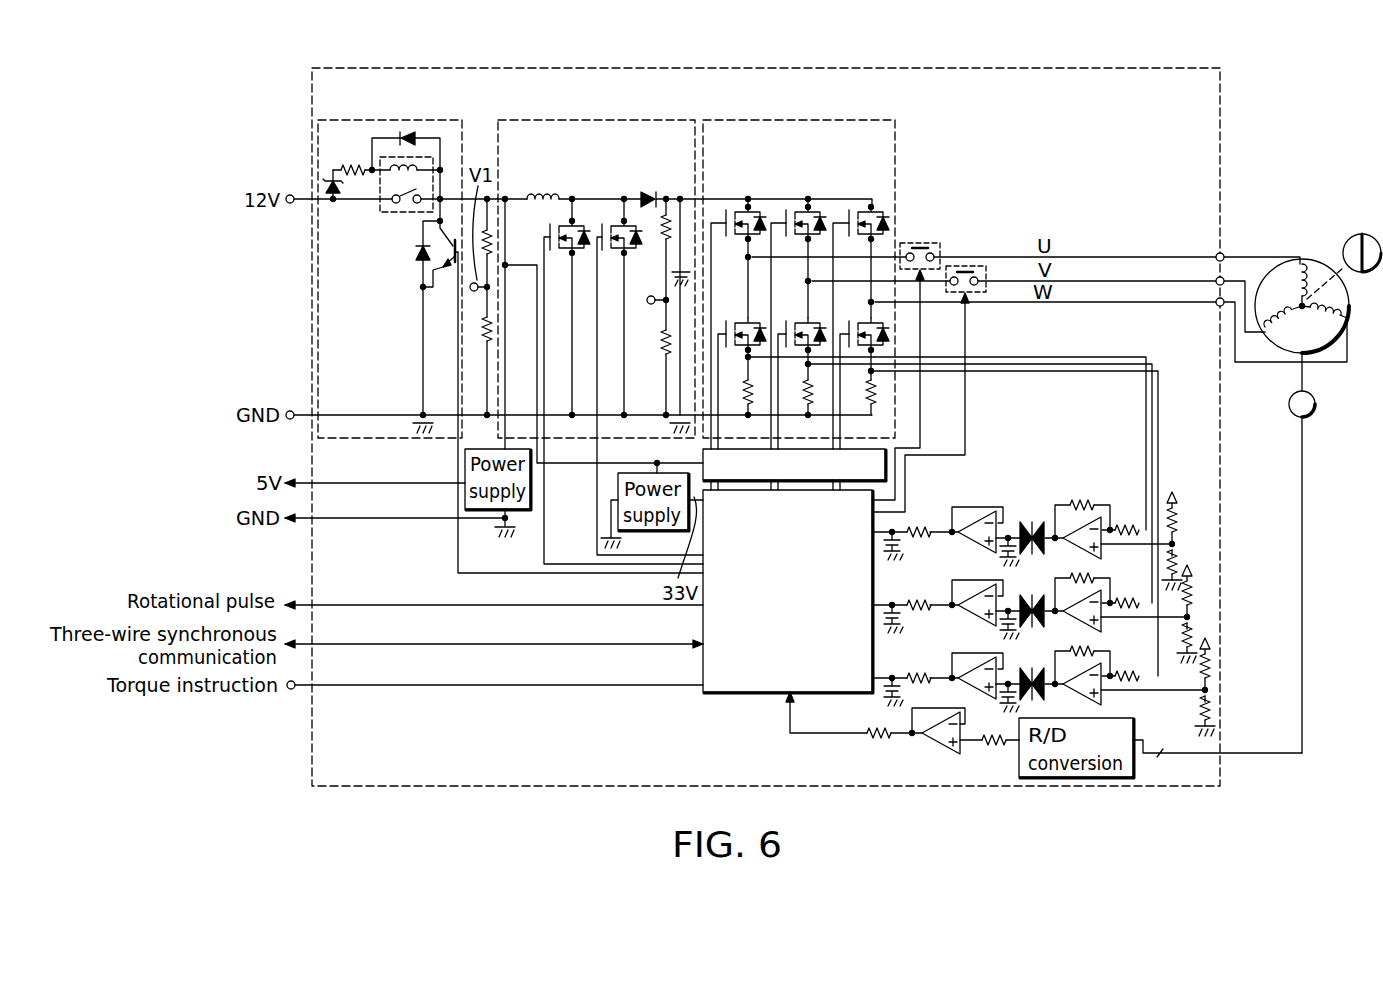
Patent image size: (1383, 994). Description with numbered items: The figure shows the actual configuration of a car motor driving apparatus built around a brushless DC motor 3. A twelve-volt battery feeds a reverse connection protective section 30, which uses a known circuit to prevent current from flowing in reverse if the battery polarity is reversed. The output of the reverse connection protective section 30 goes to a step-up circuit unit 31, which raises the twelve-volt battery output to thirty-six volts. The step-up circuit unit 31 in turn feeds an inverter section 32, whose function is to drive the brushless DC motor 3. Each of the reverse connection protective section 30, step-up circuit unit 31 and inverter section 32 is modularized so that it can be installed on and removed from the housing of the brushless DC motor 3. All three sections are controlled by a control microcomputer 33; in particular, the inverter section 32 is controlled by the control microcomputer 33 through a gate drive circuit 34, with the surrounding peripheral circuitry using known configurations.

The brushless DC motor 3 is at (1309, 262).
The reverse connection protective section 30 is at (396, 120).
The step-up circuit unit 31 is at (609, 120).
The inverter section 32 is at (809, 120).
The control microcomputer 33 is at (735, 693).
The gate drive circuit 34 is at (885, 467).